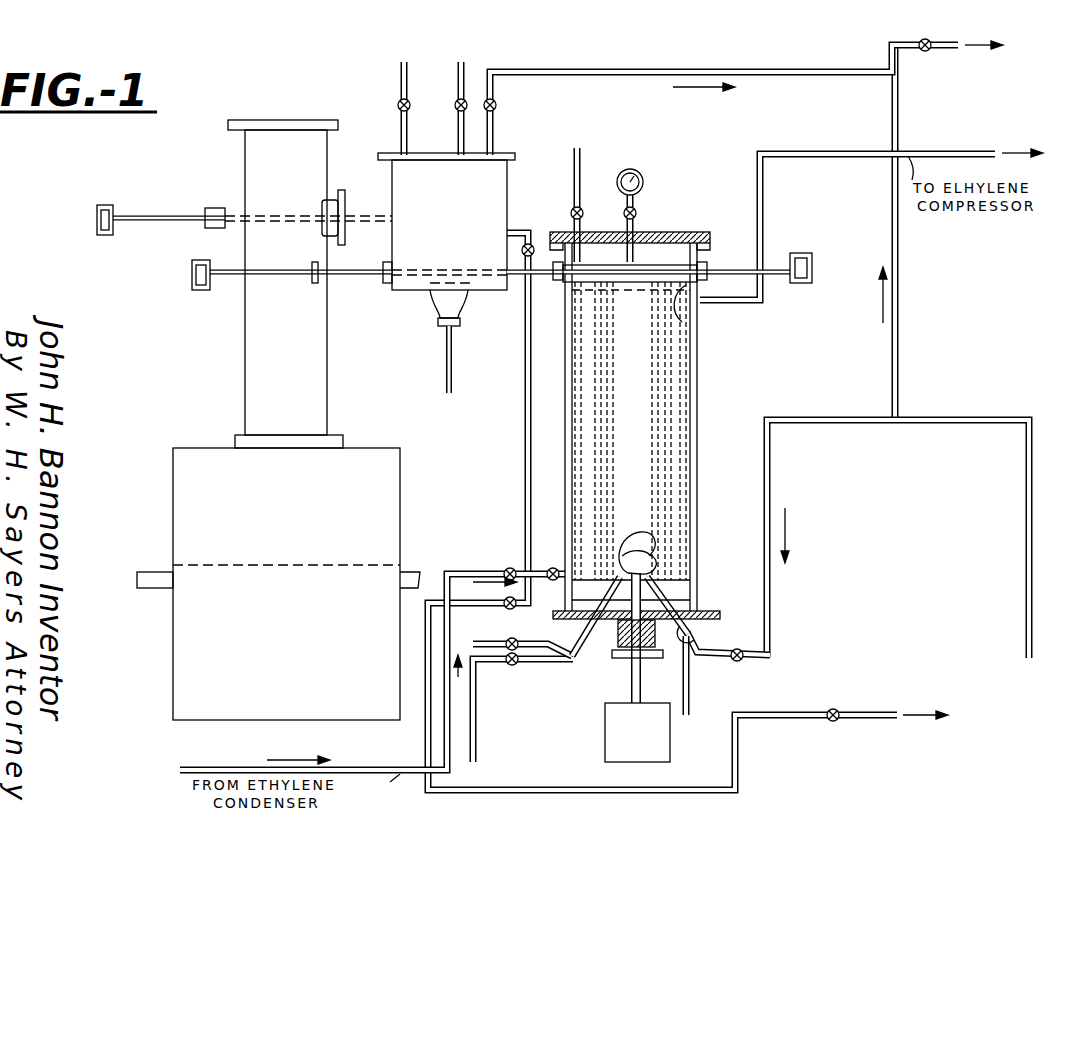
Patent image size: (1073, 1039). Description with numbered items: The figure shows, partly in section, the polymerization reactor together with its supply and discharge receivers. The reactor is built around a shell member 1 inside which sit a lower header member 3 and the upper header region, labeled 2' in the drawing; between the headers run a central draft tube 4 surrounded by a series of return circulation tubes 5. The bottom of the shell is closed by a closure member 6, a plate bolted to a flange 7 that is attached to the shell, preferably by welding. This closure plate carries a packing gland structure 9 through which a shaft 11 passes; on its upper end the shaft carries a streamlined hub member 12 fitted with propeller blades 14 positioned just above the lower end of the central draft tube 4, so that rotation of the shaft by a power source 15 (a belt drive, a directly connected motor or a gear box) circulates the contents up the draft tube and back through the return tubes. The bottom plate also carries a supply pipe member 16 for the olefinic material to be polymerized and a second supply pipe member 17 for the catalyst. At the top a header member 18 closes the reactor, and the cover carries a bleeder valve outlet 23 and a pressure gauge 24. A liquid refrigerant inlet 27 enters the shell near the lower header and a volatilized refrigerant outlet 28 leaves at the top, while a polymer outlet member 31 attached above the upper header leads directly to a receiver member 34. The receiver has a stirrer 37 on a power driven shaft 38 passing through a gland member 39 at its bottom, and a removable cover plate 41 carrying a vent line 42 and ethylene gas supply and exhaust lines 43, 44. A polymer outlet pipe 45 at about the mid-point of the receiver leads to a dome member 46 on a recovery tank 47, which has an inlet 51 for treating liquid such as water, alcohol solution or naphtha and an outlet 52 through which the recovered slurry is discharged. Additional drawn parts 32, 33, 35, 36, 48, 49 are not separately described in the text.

The shell member 1 is at (700, 447).
The wire 2' is at (700, 314).
The lower header member 3 is at (700, 562).
The central draft tube 4 is at (653, 380).
The return circulation tubes 5 is at (568, 368).
The closure member 6 is at (715, 620).
The flange 7 is at (712, 611).
The packing gland structure 9 is at (615, 650).
The shaft 11 is at (642, 682).
The streamlined hub member 12 is at (637, 526).
The propeller blades 14 is at (620, 553).
The power source 15 is at (605, 735).
The supply pipe member 16 is at (822, 423).
The second supply pipe member 17 is at (572, 642).
The top header member 18 is at (690, 230).
The bleeder valve outlet 23 is at (579, 192).
The pressure gauge 24 is at (644, 184).
The liquid refrigerant inlet 27 is at (462, 570).
The volatilized refrigerant outlet 28 is at (768, 302).
The polymer outlet member 31 is at (540, 282).
The shaft 32 is at (722, 268).
The bearing block 33 is at (806, 255).
The receiver member 34 is at (507, 190).
The shaft 35 is at (352, 270).
The collar 36 is at (385, 283).
The stirrer 37 is at (432, 288).
The power driven shaft 38 is at (453, 372).
The gland member 39 is at (462, 312).
The removable cover plate 41 is at (505, 153).
The vent line 42 is at (498, 110).
The ethylene gas supply line 43 is at (458, 123).
The ethylene gas exhaust line 44 is at (404, 118).
The polymer outlet pipe 45 is at (366, 212).
The dome member 46 is at (247, 365).
The recovery tank 47 is at (368, 447).
The shaft 48 is at (183, 216).
The box 49 is at (225, 210).
The inlet 51 is at (155, 572).
The outlet 52 is at (408, 572).